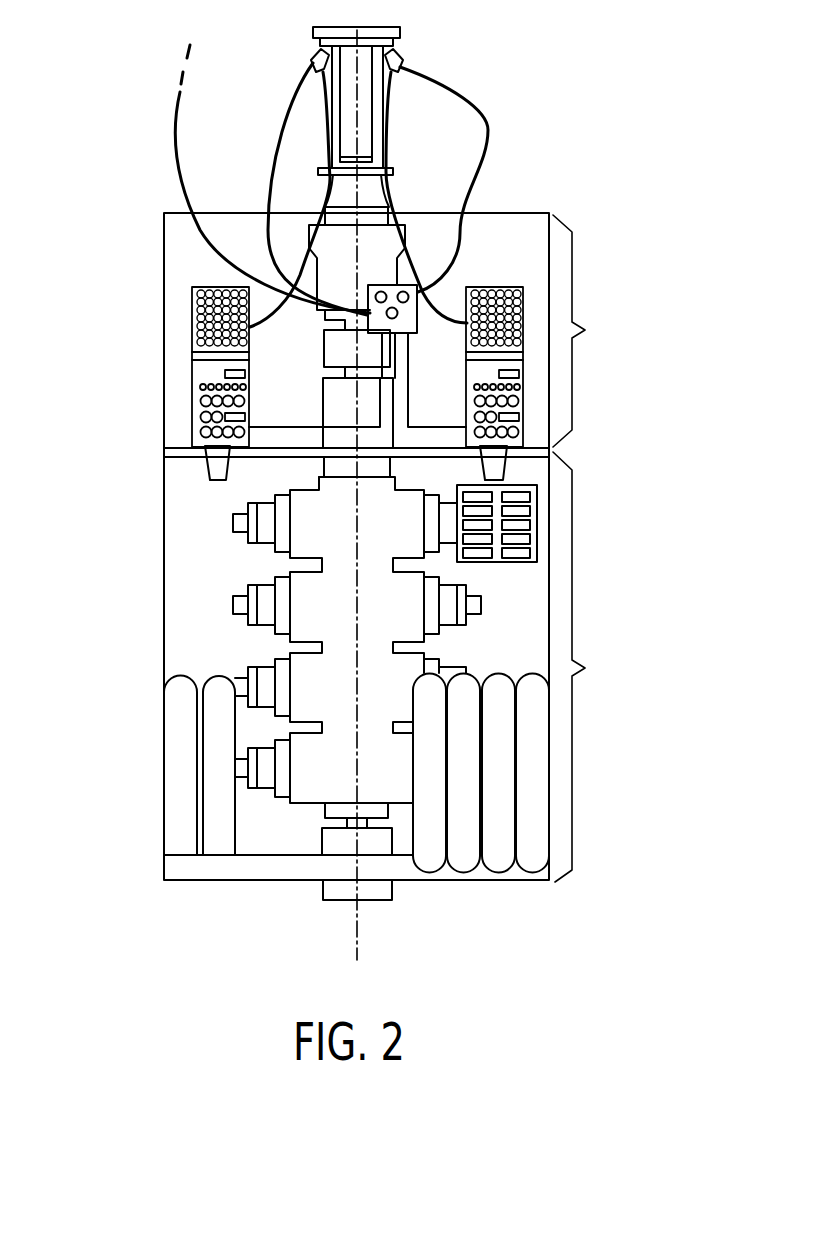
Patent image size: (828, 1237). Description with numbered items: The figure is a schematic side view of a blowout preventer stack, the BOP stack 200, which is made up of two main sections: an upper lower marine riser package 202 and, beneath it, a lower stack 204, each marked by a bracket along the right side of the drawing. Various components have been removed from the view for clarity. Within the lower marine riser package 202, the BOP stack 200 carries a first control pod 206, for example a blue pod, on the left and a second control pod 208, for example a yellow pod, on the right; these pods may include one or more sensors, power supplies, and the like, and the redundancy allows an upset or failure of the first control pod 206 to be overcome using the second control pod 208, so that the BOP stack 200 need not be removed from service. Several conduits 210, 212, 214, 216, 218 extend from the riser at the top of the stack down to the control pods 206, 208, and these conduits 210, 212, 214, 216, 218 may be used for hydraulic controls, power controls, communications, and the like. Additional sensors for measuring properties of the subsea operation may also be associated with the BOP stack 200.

The BOP stack 200 is at (539, 54).
The lower marine riser package 202 is at (596, 331).
The lower stack 204 is at (594, 667).
The first control pod 206 is at (203, 284).
The second control pod 208 is at (500, 285).
The conduit 210 is at (488, 122).
The conduit 212 is at (173, 128).
The conduit 214 is at (287, 118).
The conduit 216 is at (388, 190).
The conduit 218 is at (330, 192).